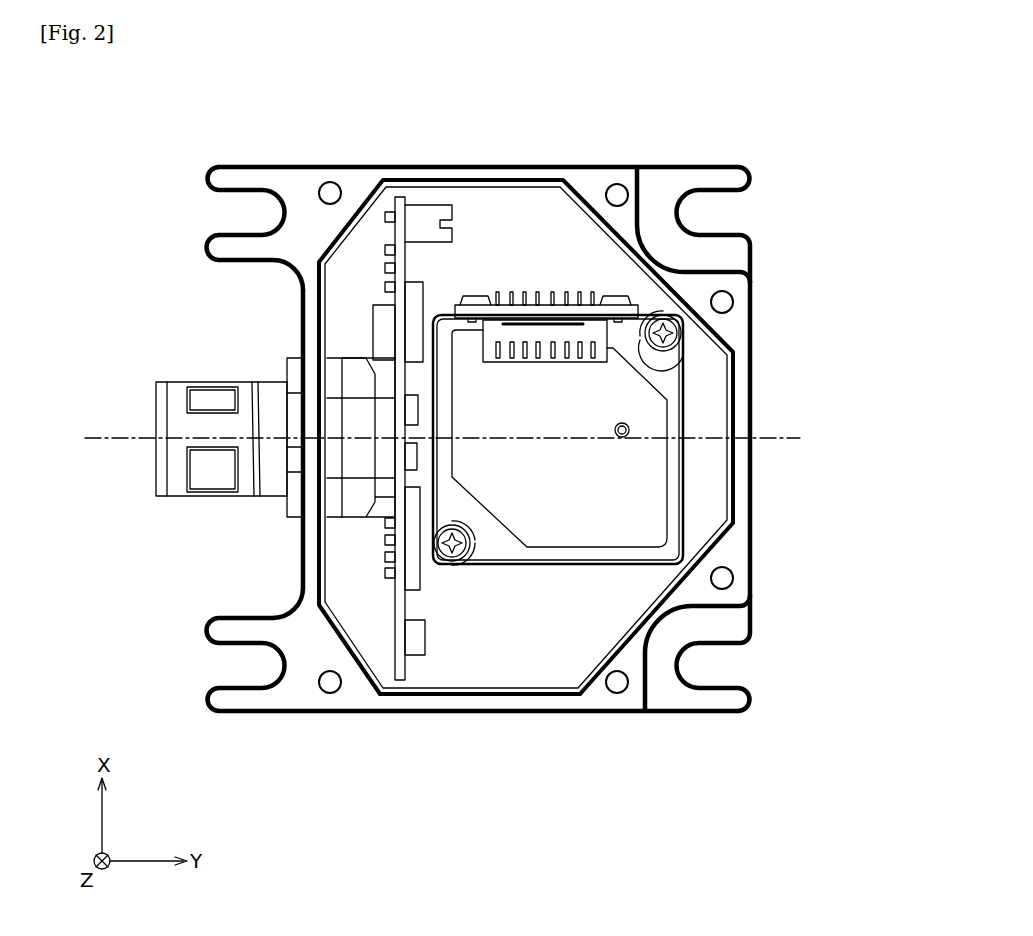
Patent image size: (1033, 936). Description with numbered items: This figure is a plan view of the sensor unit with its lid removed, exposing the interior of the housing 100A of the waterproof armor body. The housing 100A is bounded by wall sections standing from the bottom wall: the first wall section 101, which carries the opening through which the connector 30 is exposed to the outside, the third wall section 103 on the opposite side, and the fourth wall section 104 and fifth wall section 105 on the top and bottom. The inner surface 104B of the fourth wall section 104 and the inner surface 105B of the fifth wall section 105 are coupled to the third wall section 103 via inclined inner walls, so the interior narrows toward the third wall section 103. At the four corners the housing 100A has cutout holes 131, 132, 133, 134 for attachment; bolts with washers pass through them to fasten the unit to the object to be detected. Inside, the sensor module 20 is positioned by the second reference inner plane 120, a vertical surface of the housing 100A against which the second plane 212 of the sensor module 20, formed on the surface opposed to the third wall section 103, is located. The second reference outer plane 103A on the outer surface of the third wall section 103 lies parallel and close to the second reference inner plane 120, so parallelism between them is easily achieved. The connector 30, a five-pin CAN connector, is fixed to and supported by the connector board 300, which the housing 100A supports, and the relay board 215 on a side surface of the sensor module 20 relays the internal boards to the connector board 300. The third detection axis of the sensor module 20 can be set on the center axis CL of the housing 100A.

The housing 100A is at (687, 135).
The third wall section 103 is at (755, 320).
The second reference outer plane 103A is at (753, 527).
The first wall section 101 is at (300, 325).
The fourth wall section 104 is at (545, 166).
The inner surface of the fourth wall section 104B is at (483, 188).
The fifth wall section 105 is at (543, 714).
The inner surface of the fifth wall section 105B is at (488, 697).
The cutout hole 131 is at (738, 214).
The cutout hole 132 is at (738, 665).
The cutout hole 133 is at (220, 212).
The cutout hole 134 is at (220, 663).
The second reference inner plane 120 is at (688, 408).
The second plane 212 is at (667, 439).
The sensor module 20 is at (648, 472).
The relay board 215 is at (548, 320).
The connector 30 is at (183, 498).
The connector board 300 is at (395, 232).
The center axis CL is at (103, 440).